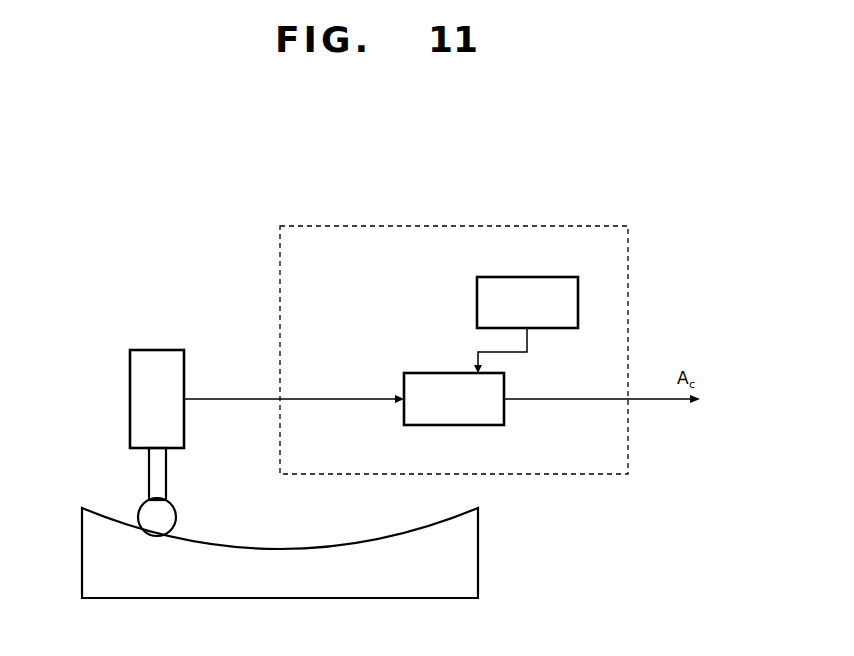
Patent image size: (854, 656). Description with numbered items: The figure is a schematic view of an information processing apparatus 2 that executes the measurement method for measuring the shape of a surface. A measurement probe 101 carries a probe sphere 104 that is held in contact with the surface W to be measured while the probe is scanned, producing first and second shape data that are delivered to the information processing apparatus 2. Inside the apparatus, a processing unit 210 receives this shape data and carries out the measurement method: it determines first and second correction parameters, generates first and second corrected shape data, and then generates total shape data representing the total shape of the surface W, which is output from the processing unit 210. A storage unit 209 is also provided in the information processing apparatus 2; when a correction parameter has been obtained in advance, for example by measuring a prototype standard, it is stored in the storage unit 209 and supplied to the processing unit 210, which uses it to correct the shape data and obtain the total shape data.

The information processing apparatus 2 is at (588, 184).
The storage unit 209 is at (525, 276).
The processing unit 210 is at (458, 426).
The measurement probe 101 is at (128, 368).
The probe sphere 104 is at (138, 508).
The surface to be measured W is at (418, 590).